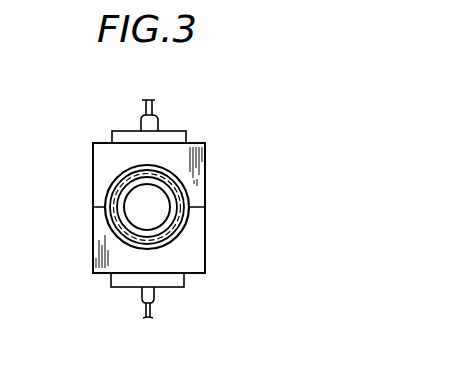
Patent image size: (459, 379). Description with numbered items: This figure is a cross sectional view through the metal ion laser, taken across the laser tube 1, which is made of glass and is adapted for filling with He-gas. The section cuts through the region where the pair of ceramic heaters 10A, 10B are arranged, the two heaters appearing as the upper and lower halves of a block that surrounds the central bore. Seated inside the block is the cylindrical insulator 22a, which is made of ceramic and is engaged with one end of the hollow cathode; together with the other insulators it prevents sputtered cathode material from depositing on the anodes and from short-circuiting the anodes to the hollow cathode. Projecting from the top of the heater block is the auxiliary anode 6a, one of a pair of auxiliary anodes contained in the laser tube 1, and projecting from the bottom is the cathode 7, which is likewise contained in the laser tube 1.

The laser tube 1 is at (183, 198).
The auxiliary anode 6a is at (153, 106).
The cathode 7 is at (152, 310).
The ceramic heater 10A is at (204, 165).
The ceramic heater 10B is at (198, 258).
The cylindrical insulator 22a is at (176, 215).